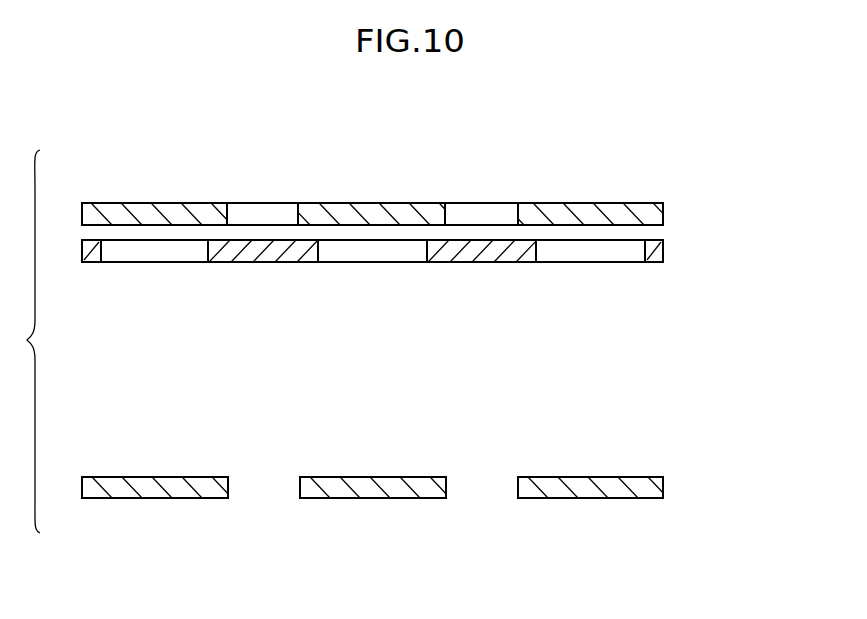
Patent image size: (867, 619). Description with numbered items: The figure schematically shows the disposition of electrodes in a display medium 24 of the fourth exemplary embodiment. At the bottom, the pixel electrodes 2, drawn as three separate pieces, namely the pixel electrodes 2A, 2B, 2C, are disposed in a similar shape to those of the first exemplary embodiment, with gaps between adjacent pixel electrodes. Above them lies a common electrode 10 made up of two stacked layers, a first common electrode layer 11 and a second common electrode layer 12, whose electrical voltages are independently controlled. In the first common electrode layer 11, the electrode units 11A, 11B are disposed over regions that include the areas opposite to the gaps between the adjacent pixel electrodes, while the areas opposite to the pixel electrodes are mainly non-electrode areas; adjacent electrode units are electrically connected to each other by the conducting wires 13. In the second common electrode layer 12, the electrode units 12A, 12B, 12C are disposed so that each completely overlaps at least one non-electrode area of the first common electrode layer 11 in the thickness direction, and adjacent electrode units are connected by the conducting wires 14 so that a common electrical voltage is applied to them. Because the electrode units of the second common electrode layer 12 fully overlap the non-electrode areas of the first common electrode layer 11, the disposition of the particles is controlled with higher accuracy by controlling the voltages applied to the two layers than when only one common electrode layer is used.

The display medium 24 is at (678, 110).
The laminate 10 is at (773, 177).
The second common electrode layer 12 is at (668, 210).
The first common electrode layer 11 is at (668, 250).
The electrode unit 12A is at (158, 212).
The electrode unit 12B is at (376, 212).
The electrode unit 12C is at (591, 212).
The conducting wire 14 is at (266, 212).
The conducting wire 13 is at (153, 253).
The electrode unit 11A is at (263, 253).
The electrode unit 11B is at (482, 253).
The pixel electrode 2 is at (668, 487).
The pixel electrode 2A is at (153, 490).
The pixel electrode 2B is at (372, 490).
The pixel electrode 2C is at (590, 490).